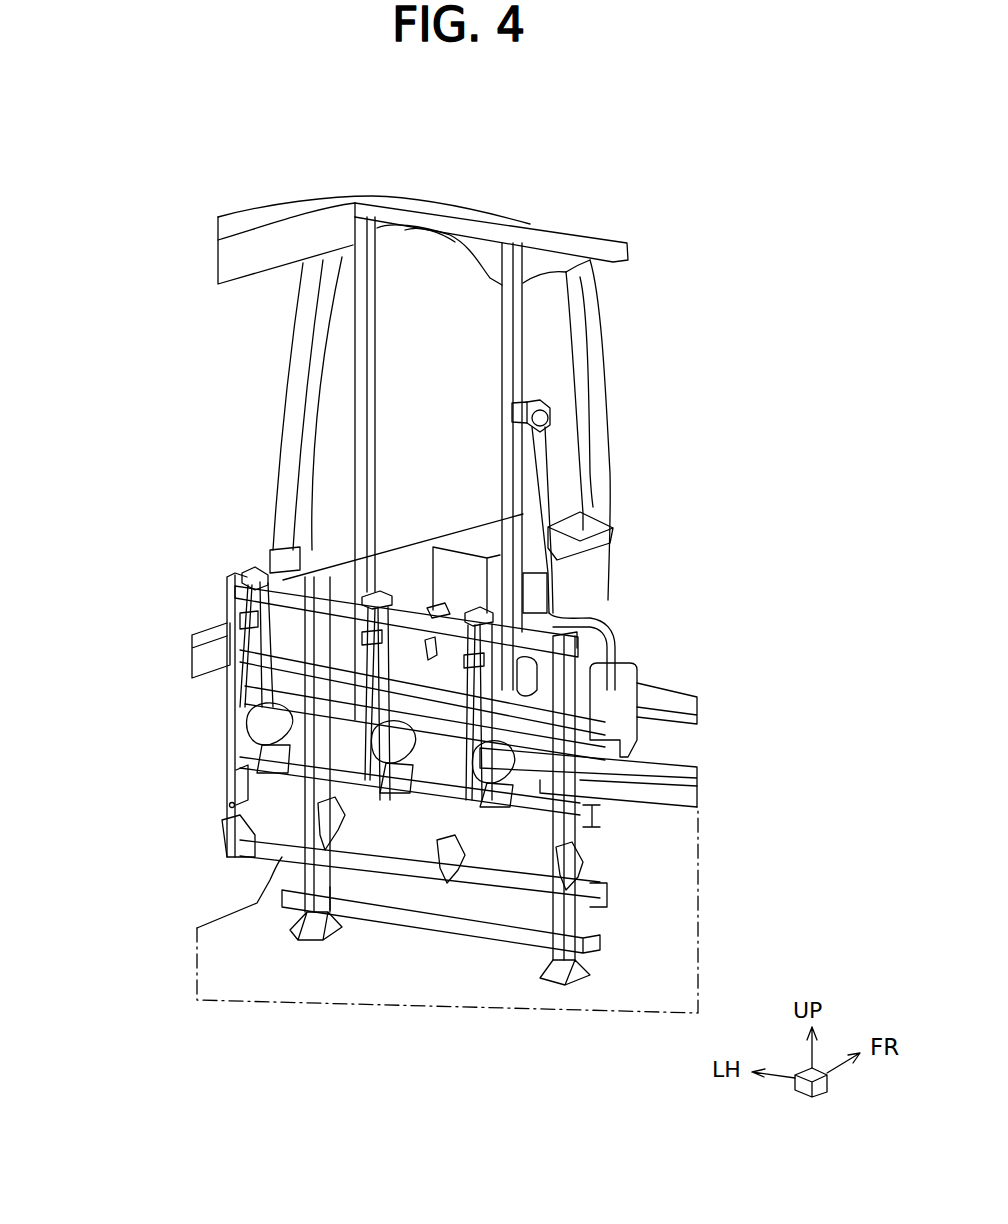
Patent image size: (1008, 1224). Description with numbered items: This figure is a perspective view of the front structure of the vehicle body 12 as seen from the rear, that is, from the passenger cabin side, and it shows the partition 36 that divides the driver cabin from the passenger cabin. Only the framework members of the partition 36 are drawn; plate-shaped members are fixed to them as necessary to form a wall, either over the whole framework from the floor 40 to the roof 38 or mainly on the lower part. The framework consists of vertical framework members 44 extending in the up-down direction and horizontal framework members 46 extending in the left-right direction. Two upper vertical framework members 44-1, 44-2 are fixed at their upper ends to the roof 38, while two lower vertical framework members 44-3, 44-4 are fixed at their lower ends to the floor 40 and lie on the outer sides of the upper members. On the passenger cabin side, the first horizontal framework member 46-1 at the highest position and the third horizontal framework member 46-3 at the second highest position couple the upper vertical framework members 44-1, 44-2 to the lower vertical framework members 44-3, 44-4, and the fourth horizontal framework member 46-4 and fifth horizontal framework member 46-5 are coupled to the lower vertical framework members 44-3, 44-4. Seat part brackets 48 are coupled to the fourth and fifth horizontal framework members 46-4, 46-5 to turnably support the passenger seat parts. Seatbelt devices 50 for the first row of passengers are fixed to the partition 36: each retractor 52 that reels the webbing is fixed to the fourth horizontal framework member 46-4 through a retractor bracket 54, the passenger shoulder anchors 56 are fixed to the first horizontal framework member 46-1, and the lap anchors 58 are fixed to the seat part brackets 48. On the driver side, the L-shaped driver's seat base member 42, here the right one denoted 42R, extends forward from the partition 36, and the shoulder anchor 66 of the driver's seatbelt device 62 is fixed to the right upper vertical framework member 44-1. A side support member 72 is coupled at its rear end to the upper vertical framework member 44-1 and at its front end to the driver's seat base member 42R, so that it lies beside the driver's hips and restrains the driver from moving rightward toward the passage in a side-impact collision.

The vehicle body 12 is at (578, 188).
The partition 36 is at (540, 320).
The roof 38 is at (413, 238).
The floor 40 is at (220, 987).
The driver's seat base member 42 is at (538, 604).
The right driver's seat base member 42R is at (608, 673).
The vertical framework members 44 is at (421, 663).
The upper vertical framework member 44-1 is at (522, 363).
The upper vertical framework member 44-2 is at (360, 337).
The lower vertical framework member 44-3 is at (580, 922).
The lower vertical framework member 44-4 is at (313, 876).
The horizontal framework members 46 is at (312, 652).
The first horizontal framework member 46-1 is at (280, 587).
The third horizontal framework member 46-3 is at (278, 668).
The fourth horizontal framework member 46-4 is at (273, 782).
The fifth horizontal framework member 46-5 is at (273, 845).
The seat part brackets 48 is at (457, 853).
The seatbelt devices 50 is at (533, 785).
The retractor 52 is at (615, 772).
The retractor bracket 54 is at (577, 835).
The shoulder anchors 56 is at (247, 572).
The lap anchors 58 is at (583, 883).
The driver's seatbelt device 62 is at (557, 497).
The shoulder anchor 66 is at (547, 415).
The side support member 72 is at (593, 610).